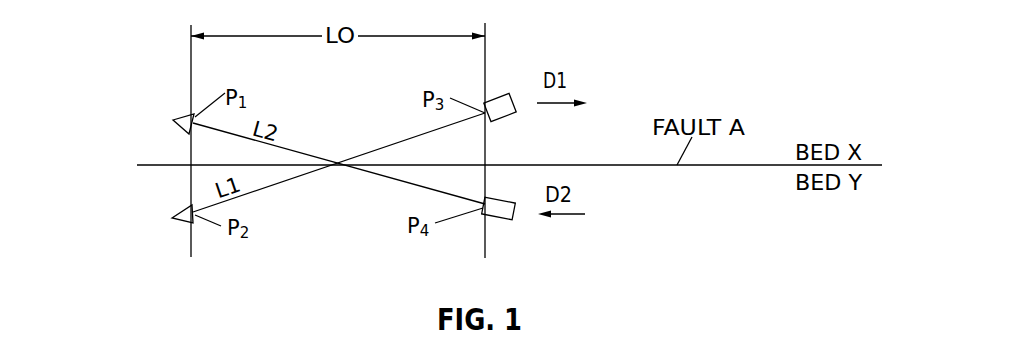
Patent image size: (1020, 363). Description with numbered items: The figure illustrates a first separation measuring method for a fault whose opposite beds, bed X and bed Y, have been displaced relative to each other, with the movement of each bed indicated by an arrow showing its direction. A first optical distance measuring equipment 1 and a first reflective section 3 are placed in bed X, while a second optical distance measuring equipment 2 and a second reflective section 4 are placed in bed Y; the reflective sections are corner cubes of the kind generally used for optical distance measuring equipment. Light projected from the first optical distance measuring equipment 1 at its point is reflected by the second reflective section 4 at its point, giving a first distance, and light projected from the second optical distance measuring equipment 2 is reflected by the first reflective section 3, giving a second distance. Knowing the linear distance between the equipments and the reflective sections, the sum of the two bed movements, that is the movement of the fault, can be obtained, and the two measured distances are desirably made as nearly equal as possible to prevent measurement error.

The first optical distance measuring equipment 1 is at (502, 97).
The second optical distance measuring equipment 2 is at (502, 220).
The first reflective section 3 is at (180, 117).
The second reflective section 4 is at (172, 213).